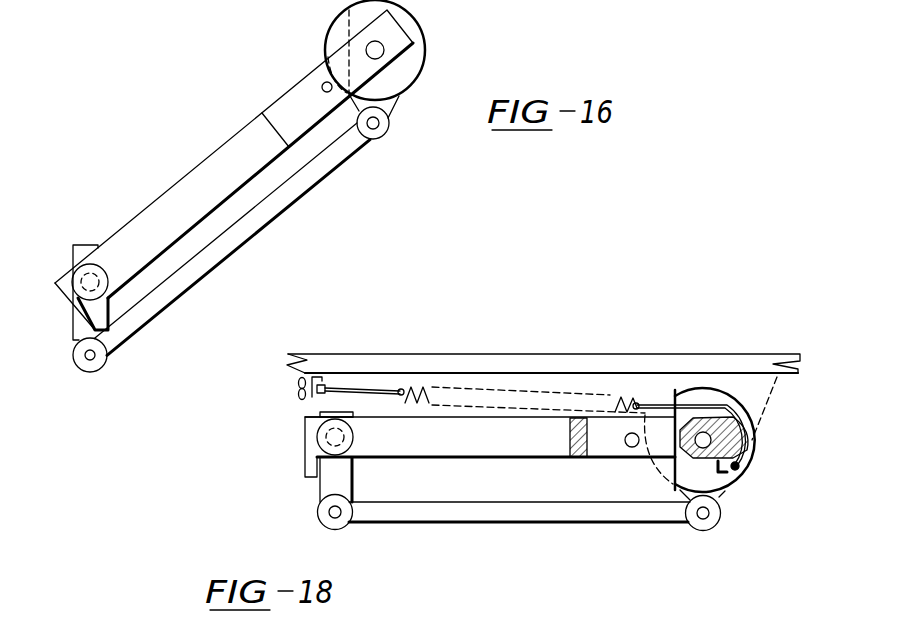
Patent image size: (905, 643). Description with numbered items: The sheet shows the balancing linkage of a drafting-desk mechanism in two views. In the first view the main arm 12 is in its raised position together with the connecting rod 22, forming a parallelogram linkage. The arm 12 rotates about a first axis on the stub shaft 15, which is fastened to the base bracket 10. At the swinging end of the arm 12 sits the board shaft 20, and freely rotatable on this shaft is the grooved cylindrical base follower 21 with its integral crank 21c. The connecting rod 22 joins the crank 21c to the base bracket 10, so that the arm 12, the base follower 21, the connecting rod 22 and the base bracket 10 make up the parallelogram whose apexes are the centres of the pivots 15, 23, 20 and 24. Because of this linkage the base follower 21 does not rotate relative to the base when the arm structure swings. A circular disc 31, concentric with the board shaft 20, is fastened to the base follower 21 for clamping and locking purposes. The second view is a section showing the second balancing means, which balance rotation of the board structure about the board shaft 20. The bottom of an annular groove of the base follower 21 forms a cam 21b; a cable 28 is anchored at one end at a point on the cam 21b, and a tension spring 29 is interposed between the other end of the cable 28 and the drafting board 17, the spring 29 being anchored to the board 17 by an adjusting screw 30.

In FIG. 16, the base bracket 10 is at (78, 333).
In FIG. 18, the base bracket 10 is at (327, 485).
In FIG. 16, the arm 12 is at (205, 172).
In FIG. 18, the arm 12 is at (445, 458).
In FIG. 16, the stub shaft 15 is at (85, 278).
In FIG. 18, the drafting board 17 is at (455, 357).
In FIG. 16, the board shaft 20 is at (379, 47).
In FIG. 16, the base follower 21 is at (410, 76).
In FIG. 18, the base follower 21 is at (735, 473).
In FIG. 18, the cam 21b is at (740, 450).
In FIG. 16, the crank 21c is at (392, 103).
In FIG. 16, the connecting rod 22 is at (260, 223).
In FIG. 18, the connecting rod 22 is at (483, 522).
In FIG. 16, the pivot 23 is at (90, 357).
In FIG. 16, the pivot 24 is at (380, 123).
In FIG. 18, the cable 28 is at (660, 405).
In FIG. 18, the tension spring 29 is at (512, 403).
In FIG. 18, the adjusting screw 30 is at (300, 397).
In FIG. 16, the circular disc 31 is at (341, 26).